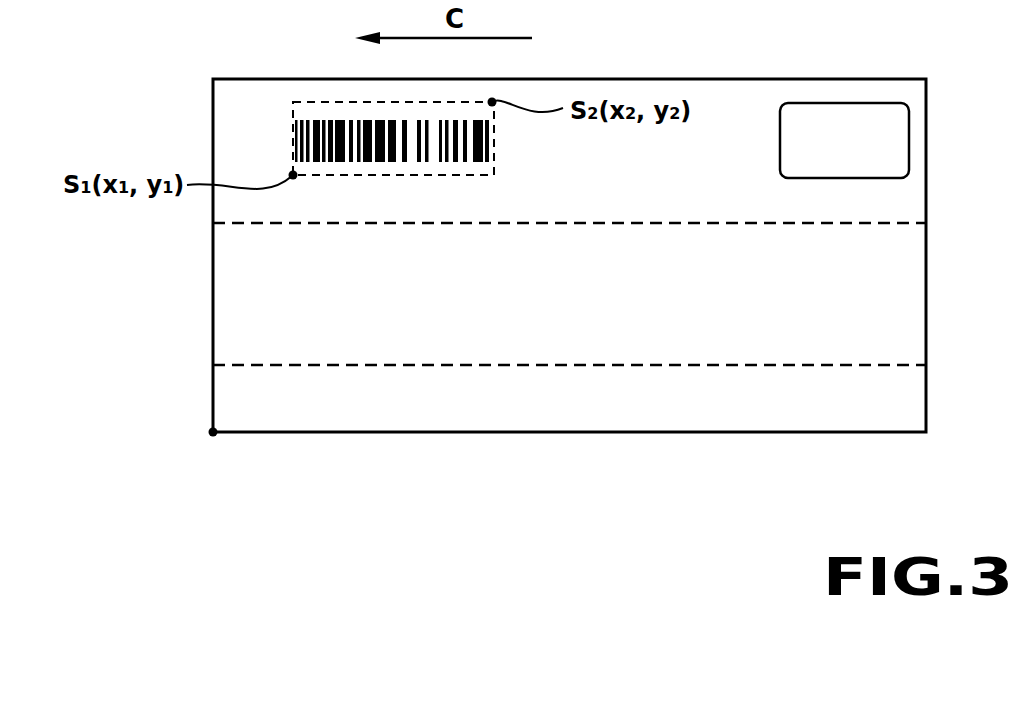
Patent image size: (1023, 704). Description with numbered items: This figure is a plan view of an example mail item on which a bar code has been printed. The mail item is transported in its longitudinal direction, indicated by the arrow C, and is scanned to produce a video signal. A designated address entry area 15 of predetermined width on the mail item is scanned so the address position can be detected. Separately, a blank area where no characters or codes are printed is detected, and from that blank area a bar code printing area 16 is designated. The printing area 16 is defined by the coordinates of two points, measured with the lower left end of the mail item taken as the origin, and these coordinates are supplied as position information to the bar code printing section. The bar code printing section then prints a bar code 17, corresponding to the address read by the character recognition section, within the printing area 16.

The designated address entry area 15 is at (893, 307).
The bar code printing area 16 is at (295, 101).
The bar code 17 is at (298, 146).